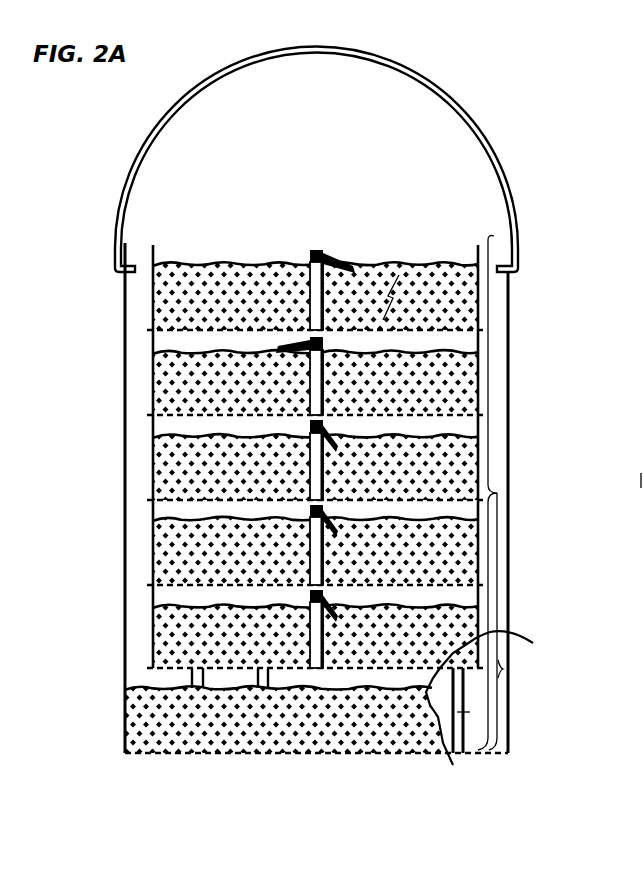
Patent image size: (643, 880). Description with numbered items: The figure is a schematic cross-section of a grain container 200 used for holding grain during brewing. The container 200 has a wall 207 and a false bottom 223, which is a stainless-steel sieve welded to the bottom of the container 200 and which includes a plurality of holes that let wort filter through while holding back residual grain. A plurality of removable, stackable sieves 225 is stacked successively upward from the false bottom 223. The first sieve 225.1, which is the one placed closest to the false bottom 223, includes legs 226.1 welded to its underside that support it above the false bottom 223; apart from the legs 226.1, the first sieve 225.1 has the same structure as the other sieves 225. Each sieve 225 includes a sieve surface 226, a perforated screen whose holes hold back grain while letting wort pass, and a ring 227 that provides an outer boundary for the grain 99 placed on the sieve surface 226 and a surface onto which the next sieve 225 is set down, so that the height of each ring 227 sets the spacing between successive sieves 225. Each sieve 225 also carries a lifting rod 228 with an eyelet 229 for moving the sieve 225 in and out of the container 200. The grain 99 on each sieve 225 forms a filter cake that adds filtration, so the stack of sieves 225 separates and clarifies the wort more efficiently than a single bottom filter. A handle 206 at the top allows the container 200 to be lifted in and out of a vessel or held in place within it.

The grain container 200 is at (556, 71).
The handle 206 is at (458, 103).
The wall 207 is at (125, 380).
The ring 227 is at (153, 290).
The sieve surface 226 is at (147, 330).
The grain 99 is at (190, 473).
The sieve 225 is at (500, 497).
The first sieve 225.1 is at (500, 670).
The legs 226.1 is at (457, 712).
The false bottom 223 is at (498, 755).
The lifting rod 228 is at (310, 256).
The eyelet 229 is at (327, 257).